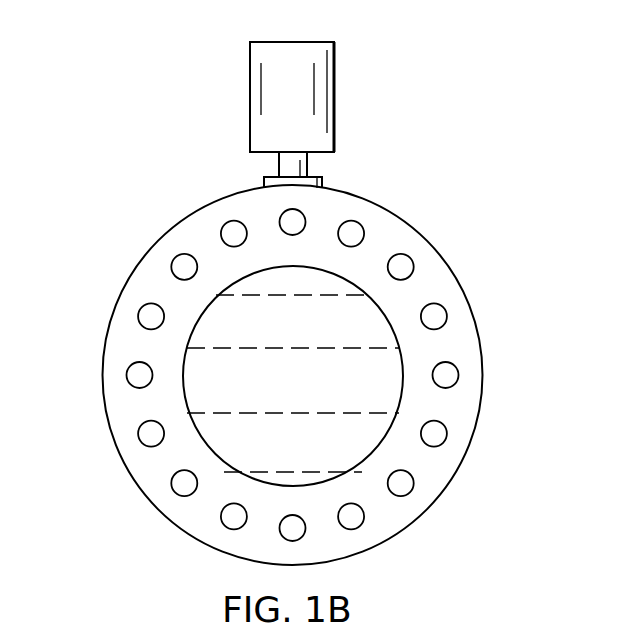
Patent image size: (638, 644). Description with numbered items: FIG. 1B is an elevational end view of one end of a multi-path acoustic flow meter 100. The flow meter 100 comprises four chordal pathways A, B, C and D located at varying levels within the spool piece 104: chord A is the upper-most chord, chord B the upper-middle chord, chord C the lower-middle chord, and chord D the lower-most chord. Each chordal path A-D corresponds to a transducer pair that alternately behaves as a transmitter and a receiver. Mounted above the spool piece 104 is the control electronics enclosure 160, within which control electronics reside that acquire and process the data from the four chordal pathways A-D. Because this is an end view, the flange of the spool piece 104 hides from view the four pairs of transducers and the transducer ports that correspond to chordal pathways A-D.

The flow meter 100 is at (293, 303).
The spool piece 104 is at (416, 226).
The control electronics enclosure 160 is at (335, 97).